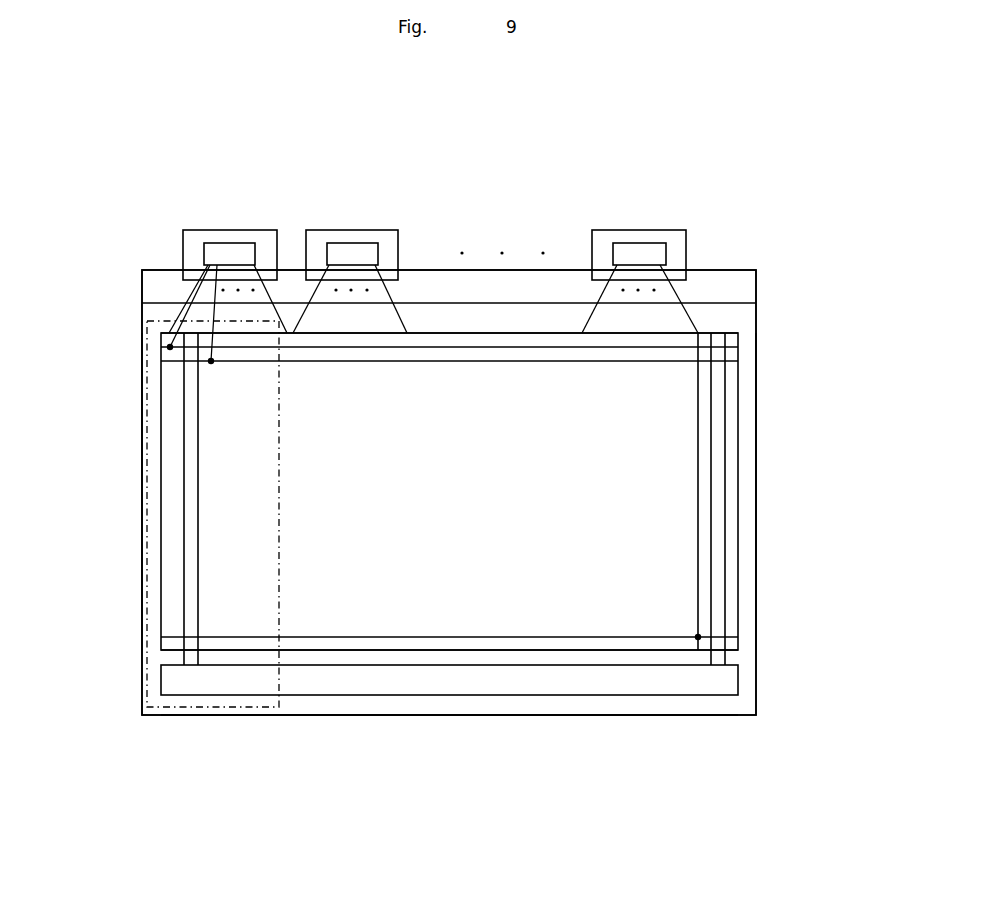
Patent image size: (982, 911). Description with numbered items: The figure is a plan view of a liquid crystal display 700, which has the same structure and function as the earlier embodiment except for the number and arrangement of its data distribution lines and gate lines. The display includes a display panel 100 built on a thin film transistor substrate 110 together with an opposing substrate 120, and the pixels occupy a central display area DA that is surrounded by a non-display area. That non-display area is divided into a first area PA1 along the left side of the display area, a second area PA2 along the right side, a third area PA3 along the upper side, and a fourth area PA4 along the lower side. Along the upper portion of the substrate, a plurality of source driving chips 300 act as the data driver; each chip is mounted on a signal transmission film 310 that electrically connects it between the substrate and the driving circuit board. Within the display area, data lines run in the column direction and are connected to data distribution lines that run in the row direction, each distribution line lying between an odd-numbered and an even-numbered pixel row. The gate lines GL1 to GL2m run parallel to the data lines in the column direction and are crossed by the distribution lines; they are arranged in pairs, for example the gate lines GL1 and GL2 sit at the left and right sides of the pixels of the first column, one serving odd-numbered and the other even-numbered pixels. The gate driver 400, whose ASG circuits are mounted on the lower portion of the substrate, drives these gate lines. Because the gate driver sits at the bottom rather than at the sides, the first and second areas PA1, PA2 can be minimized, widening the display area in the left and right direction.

The liquid crystal display 700 is at (153, 138).
The display panel 100 is at (828, 278).
The thin film transistor substrate 110 is at (748, 285).
The second substrate / peripheral portion 120 is at (748, 323).
The signal transmission film 310 is at (215, 229).
The source driving chip 300 is at (237, 243).
The third area PA3 is at (488, 279).
The display area DA is at (686, 503).
The gate line GL1 is at (184, 512).
The gate line GL2 is at (198, 558).
The gate line GL2m is at (727, 407).
The gate driver 400 is at (738, 677).
The first area PA1 is at (150, 452).
The second area PA2 is at (750, 450).
The fourth area PA4 is at (507, 704).